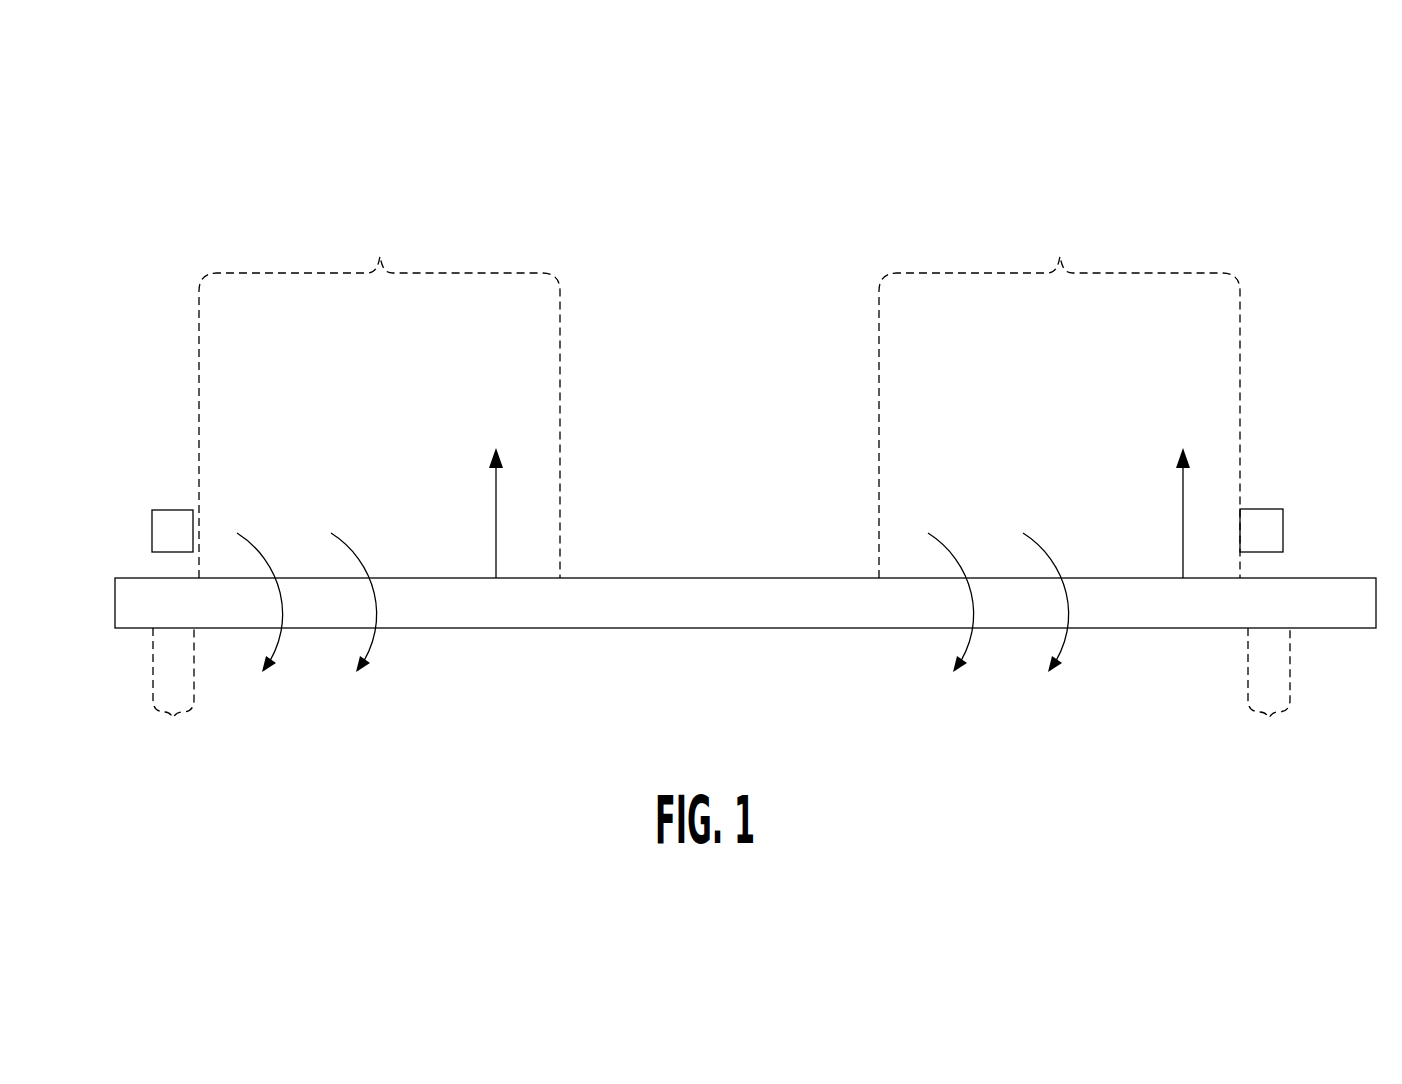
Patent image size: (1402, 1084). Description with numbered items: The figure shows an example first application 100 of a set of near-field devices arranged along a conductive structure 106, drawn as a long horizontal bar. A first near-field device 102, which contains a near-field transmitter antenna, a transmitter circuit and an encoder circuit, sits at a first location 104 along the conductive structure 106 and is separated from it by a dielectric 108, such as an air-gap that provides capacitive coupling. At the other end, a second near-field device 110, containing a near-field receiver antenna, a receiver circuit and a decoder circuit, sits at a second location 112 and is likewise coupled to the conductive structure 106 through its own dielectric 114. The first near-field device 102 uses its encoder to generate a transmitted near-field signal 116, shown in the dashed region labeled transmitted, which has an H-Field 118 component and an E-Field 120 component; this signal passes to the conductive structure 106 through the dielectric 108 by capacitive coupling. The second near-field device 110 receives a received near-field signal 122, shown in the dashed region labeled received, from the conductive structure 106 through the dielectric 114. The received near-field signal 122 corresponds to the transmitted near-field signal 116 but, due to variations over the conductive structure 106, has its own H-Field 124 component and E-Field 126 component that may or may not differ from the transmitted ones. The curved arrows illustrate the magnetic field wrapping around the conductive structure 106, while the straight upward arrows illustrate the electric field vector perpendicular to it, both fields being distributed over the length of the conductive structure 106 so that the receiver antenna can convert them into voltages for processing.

The first application 100 is at (137, 226).
The first near-field device 102 is at (163, 508).
The first location 104 is at (173, 691).
The conductive structure 106 is at (720, 578).
The dielectric 108 is at (152, 565).
The second near-field device 110 is at (1262, 507).
The second location 112 is at (1269, 692).
The dielectric 114 is at (1273, 565).
The transmitted near-field signal 116 is at (380, 256).
The H-Field 118 is at (352, 543).
The E-Field 120 is at (493, 512).
The received near-field signal 122 is at (1060, 256).
The H-Field 124 is at (1042, 545).
The E-Field 126 is at (1177, 487).